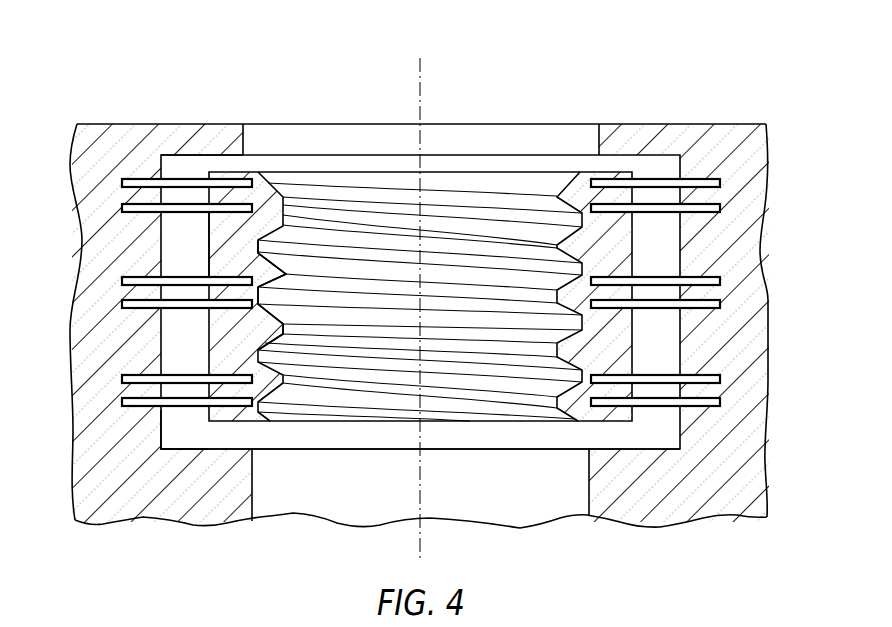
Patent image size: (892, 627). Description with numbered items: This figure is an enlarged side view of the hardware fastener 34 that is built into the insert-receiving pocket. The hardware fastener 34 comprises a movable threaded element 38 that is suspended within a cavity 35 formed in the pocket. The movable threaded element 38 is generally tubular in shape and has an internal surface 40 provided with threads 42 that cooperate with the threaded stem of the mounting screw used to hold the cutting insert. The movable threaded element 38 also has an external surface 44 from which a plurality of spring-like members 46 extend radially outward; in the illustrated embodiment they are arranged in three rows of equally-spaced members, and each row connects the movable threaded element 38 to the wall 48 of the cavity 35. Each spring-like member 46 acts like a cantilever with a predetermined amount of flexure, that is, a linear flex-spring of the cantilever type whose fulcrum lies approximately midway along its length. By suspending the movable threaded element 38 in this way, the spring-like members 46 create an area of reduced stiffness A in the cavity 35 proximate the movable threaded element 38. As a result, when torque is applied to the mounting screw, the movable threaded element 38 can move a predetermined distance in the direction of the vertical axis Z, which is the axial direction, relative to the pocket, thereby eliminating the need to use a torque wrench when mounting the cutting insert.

The hardware fastener 34 is at (525, 173).
The cavity 35 is at (173, 432).
The movable threaded element 38 is at (253, 248).
The internal surface 40 is at (285, 275).
The threads 42 is at (283, 303).
The external surface 44 is at (207, 355).
The spring-like members 46 is at (128, 197).
The wall 48 is at (207, 440).
The area of reduced stiffness A is at (189, 167).
The vertical axis Z is at (432, 78).